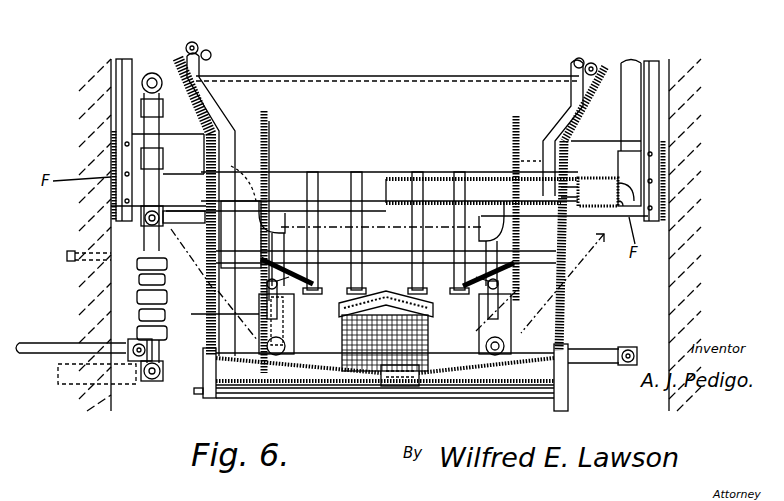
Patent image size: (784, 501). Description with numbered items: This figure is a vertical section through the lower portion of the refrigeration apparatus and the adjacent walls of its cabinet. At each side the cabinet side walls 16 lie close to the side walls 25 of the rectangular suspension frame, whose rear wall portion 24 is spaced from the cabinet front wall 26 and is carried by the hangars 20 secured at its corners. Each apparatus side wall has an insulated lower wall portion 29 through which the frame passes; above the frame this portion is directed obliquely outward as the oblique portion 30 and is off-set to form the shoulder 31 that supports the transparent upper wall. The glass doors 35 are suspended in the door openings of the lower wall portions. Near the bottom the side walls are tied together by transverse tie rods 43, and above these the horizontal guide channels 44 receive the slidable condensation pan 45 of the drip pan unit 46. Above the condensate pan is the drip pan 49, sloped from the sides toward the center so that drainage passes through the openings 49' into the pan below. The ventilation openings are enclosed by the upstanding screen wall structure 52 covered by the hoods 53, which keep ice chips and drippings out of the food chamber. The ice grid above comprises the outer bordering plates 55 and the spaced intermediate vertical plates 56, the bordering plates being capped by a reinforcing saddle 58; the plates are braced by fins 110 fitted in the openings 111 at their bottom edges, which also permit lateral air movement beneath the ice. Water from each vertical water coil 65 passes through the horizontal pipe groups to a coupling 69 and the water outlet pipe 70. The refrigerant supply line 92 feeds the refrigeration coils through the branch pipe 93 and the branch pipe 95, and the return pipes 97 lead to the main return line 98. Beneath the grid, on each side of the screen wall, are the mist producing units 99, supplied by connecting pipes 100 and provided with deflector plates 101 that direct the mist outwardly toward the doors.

The side walls 16 is at (107, 223).
The hangars 20 is at (118, 60).
The rear wall portion 24 is at (412, 100).
The side walls 25 is at (112, 150).
The front wall 26 is at (437, 172).
The lower wall portion 29 is at (266, 144).
The oblique portion 30 is at (200, 92).
The shoulder 31 is at (180, 68).
The glass doors 35 is at (212, 345).
The transverse tie rods 43 is at (412, 390).
The horizontal guide channels 44 is at (240, 392).
The condensation pan 45 is at (458, 388).
The drip pan unit 46 is at (498, 386).
The drip pan 49 is at (385, 390).
The openings 49' is at (384, 402).
The screen wall structure 52 is at (345, 334).
The hoods 53 is at (382, 298).
The outer bordering plates 55 is at (290, 170).
The intermediate vertical plates 56 is at (312, 171).
The reinforcing saddle 58 is at (266, 112).
The vertical water coil 65 is at (150, 72).
The coupling 69 is at (140, 262).
The water outlet pipe 70 is at (151, 382).
The refrigerant supply line 92 is at (37, 354).
The branch pipe 93 is at (632, 346).
The branch pipe 95 is at (133, 362).
The return pipes 97 is at (212, 110).
The main return line 98 is at (66, 255).
The mist producing units 99 is at (255, 313).
The connecting pipes 100 is at (198, 150).
The deflector plates 101 is at (266, 284).
The fins 110 is at (300, 280).
The openings 111 is at (547, 236).